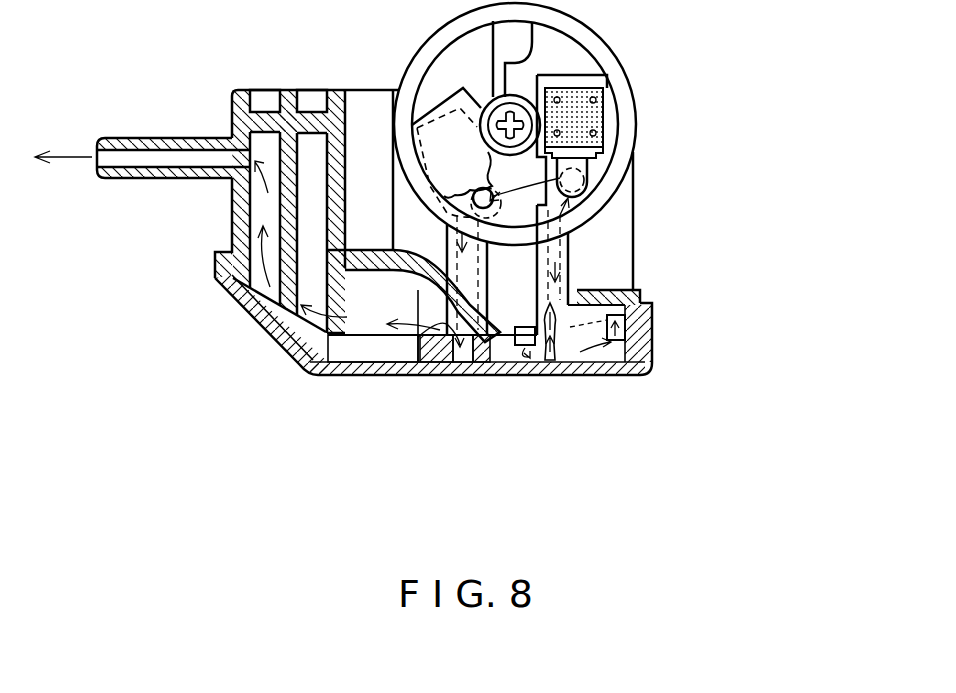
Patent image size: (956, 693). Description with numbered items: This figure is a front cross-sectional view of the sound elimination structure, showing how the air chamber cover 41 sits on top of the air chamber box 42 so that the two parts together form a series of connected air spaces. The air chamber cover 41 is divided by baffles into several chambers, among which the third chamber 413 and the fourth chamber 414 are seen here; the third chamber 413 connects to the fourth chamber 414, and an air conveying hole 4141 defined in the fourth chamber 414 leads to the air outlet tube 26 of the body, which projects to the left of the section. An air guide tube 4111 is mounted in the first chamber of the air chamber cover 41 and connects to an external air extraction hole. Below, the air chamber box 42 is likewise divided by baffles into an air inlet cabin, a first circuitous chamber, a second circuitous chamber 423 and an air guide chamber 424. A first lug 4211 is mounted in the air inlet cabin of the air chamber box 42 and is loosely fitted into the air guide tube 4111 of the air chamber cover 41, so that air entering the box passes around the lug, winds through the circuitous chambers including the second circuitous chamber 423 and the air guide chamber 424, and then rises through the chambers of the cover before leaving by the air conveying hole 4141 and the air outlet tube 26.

The air outlet tube 26 is at (130, 147).
The air chamber cover 41 is at (640, 288).
The air chamber box 42 is at (648, 373).
The third chamber 413 is at (480, 330).
The fourth chamber 414 is at (357, 317).
The air conveying hole 4141 is at (290, 317).
The second circuitous chamber 423 is at (475, 360).
The air guide chamber 424 is at (363, 350).
The first lug 4211 is at (545, 332).
The air guide tube 4111 is at (560, 335).